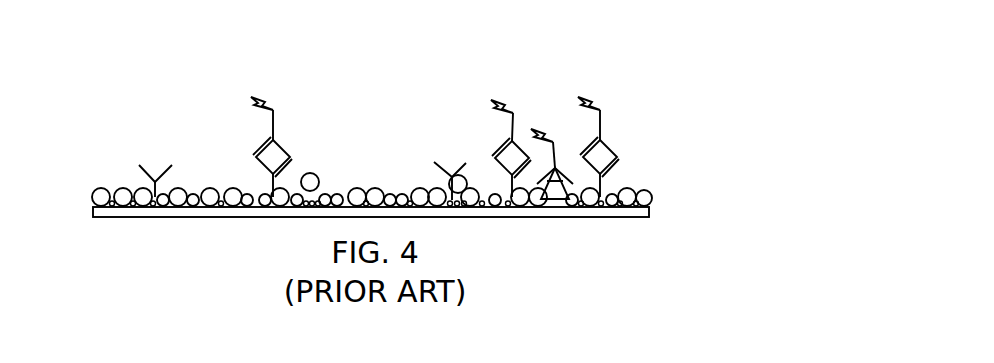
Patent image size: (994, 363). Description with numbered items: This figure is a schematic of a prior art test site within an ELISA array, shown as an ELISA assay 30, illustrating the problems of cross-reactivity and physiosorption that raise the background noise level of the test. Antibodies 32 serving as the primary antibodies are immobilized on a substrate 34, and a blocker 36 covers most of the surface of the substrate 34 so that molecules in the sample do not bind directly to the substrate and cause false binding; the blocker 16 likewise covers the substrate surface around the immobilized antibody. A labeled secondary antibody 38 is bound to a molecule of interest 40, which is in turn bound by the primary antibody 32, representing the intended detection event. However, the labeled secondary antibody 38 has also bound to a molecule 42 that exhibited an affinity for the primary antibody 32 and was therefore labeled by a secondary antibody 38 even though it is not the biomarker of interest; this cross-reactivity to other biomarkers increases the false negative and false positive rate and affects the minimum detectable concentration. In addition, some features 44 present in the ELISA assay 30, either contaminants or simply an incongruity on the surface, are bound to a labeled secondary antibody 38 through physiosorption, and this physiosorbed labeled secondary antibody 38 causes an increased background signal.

The ELISA assay 30 is at (436, 157).
The antibody 32 is at (170, 165).
The substrate 34 is at (649, 212).
The blocker 36 is at (316, 175).
The labeled secondary antibody 38 is at (253, 98).
The molecule of interest 40 is at (256, 157).
The molecule 42 is at (494, 159).
The features 44 is at (543, 202).
The blocker 16 is at (618, 157).